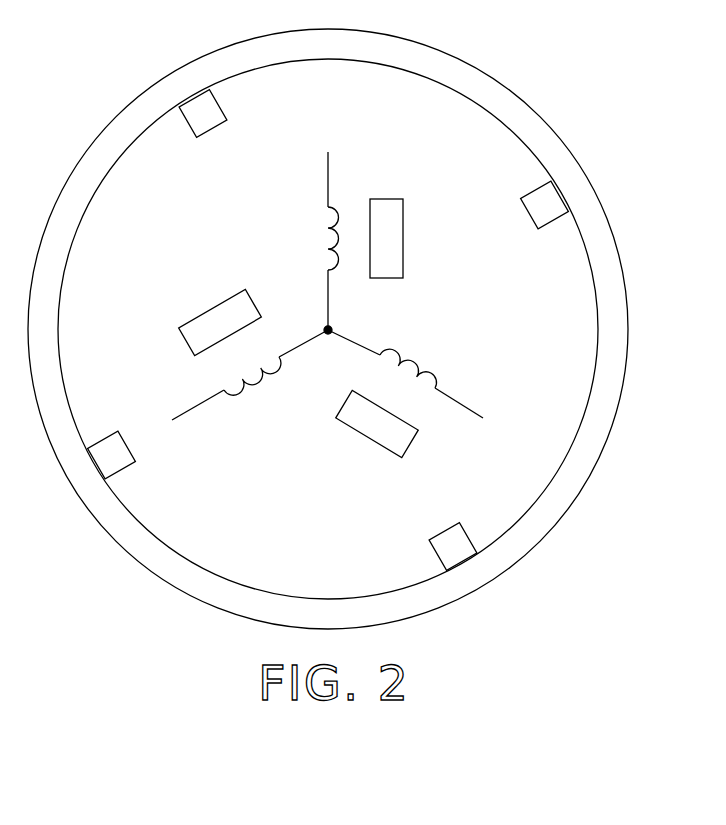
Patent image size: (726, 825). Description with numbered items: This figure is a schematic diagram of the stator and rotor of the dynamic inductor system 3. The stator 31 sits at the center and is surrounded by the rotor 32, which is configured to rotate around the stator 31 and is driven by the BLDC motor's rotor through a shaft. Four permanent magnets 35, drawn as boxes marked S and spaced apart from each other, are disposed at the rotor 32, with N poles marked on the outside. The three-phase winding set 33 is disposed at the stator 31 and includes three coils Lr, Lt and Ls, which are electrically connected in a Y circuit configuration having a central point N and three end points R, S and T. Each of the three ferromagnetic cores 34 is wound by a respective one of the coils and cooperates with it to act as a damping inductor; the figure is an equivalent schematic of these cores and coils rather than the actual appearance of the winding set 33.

The dynamic inductor system 3 is at (353, 348).
The stator 31 is at (513, 390).
The rotor 32 is at (563, 472).
The three-phase winding set 33 is at (213, 258).
The ferromagnetic core 34 is at (212, 306).
The magnet 35 is at (213, 126).